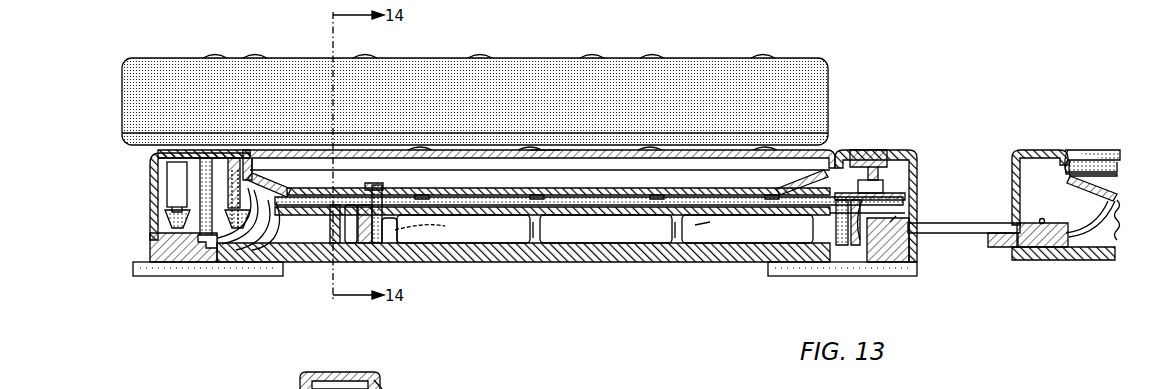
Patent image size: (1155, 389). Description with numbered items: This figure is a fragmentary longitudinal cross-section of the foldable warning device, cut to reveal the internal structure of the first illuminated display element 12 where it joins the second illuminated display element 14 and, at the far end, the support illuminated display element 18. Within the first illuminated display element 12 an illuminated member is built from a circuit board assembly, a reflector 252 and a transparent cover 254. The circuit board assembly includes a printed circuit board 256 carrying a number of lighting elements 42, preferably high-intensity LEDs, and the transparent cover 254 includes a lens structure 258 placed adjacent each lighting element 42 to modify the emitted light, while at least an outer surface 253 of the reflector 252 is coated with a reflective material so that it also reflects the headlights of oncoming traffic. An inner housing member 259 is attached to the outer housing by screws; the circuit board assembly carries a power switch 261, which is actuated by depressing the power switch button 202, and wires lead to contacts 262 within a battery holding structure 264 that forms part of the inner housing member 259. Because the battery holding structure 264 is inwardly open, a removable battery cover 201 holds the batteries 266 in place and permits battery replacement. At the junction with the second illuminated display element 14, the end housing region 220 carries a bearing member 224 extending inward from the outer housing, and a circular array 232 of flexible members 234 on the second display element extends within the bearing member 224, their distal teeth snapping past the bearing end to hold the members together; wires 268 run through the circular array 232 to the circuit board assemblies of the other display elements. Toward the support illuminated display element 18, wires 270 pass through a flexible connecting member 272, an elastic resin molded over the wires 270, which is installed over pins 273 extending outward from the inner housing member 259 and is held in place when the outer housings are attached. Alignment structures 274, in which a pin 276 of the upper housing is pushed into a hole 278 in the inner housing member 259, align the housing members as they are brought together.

The first illuminated display element 12 is at (179, 278).
The second illuminated display element 14 is at (151, 46).
The support illuminated display element 18 is at (1021, 260).
The lighting element 42 is at (307, 186).
The battery cover 201 is at (650, 263).
The power switch button 202 is at (871, 147).
The side housing 220 is at (156, 181).
The bearing member 224 is at (167, 203).
The circular array 232 is at (234, 255).
The flexible member 234 is at (165, 226).
The reflector 252 is at (477, 180).
The outer surface 253 is at (517, 170).
The transparent cover 254 is at (287, 142).
The printed circuit board 256 is at (283, 232).
The lens structure 258 is at (540, 150).
The inner housing member 259 is at (604, 228).
The power switch 261 is at (380, 263).
The contact 262 is at (482, 262).
The battery holding structure 264 is at (553, 246).
The battery 266 is at (709, 225).
The wire 268 is at (292, 240).
The wire 270 is at (871, 262).
The flexible connecting member 272 is at (925, 238).
The pin 273 is at (1038, 221).
The alignment structure 274 is at (314, 258).
The pin 276 is at (365, 379).
The hole 278 is at (427, 379).